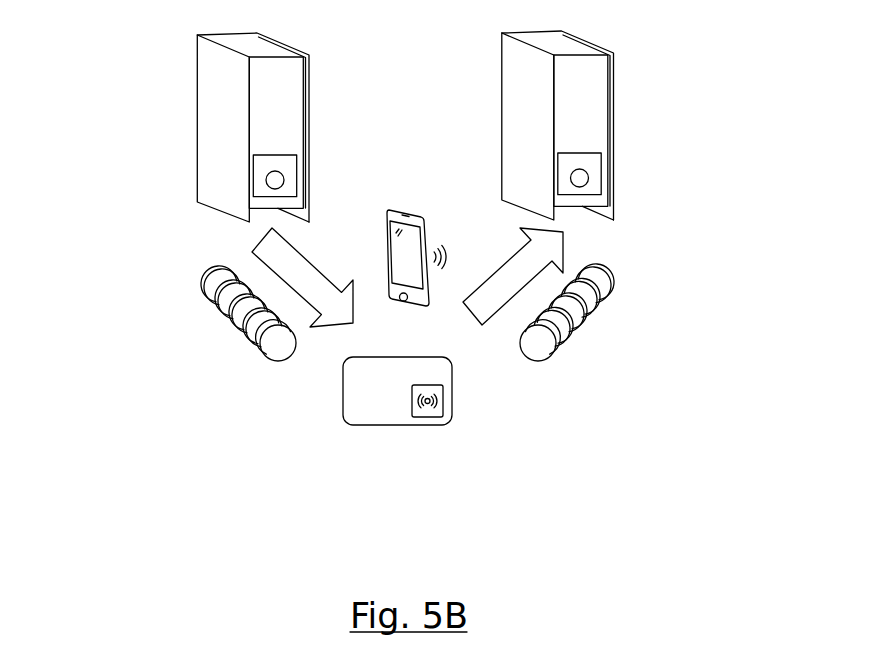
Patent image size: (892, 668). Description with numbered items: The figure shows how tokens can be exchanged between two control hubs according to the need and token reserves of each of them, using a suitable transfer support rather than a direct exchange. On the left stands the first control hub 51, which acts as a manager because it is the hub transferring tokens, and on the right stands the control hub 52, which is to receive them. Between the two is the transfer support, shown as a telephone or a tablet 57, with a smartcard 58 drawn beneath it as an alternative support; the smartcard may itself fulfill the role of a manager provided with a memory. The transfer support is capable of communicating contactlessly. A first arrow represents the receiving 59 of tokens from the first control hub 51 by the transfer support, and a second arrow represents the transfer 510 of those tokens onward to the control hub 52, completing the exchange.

The first control hub 51 is at (232, 133).
The control hub 52 is at (578, 133).
The telephone or tablet 57 is at (407, 270).
The smartcard 58 is at (400, 410).
The receiving of tokens 59 is at (272, 253).
The transfer of tokens 510 is at (538, 255).